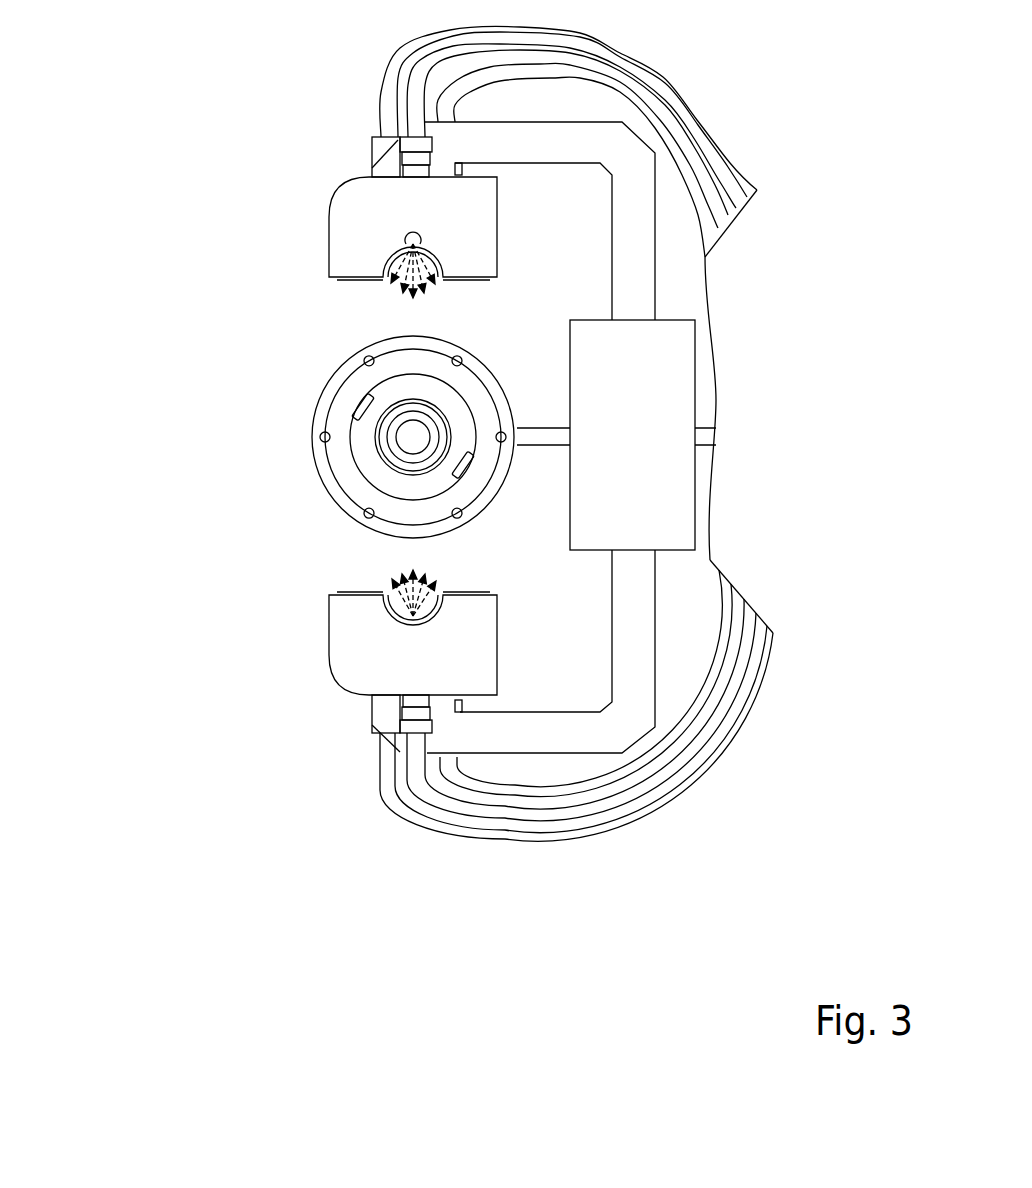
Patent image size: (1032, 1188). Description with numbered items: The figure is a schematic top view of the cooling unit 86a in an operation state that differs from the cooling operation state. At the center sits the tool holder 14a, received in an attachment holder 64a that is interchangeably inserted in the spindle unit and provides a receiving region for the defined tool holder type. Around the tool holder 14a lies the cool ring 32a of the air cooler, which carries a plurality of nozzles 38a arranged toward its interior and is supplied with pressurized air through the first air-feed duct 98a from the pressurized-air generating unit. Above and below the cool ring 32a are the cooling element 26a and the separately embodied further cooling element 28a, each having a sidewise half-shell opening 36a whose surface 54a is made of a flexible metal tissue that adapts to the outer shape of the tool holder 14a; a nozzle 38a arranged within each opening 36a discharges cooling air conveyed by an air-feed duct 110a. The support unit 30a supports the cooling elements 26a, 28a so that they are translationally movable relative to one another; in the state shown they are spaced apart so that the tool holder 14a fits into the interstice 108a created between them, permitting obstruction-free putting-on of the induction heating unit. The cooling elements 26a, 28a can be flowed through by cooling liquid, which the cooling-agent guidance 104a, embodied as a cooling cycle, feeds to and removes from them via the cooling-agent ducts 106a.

The tool holder 14a is at (408, 458).
The cooling element 26a is at (355, 625).
The further cooling element 28a is at (385, 203).
The support unit 30a is at (676, 312).
The cool ring 32a is at (323, 403).
The half-shell opening 36a is at (400, 283).
The nozzle 38a is at (410, 238).
The surface of the opening 54a is at (448, 283).
The attachment holder 64a is at (363, 442).
The cooling unit 86a is at (140, 295).
The first air-feed duct 98a is at (555, 432).
The cooling-agent guidance 104a is at (361, 775).
The cooling-agent ducts 106a is at (390, 92).
The interstice 108a is at (445, 547).
The air-feed duct 110a is at (417, 107).